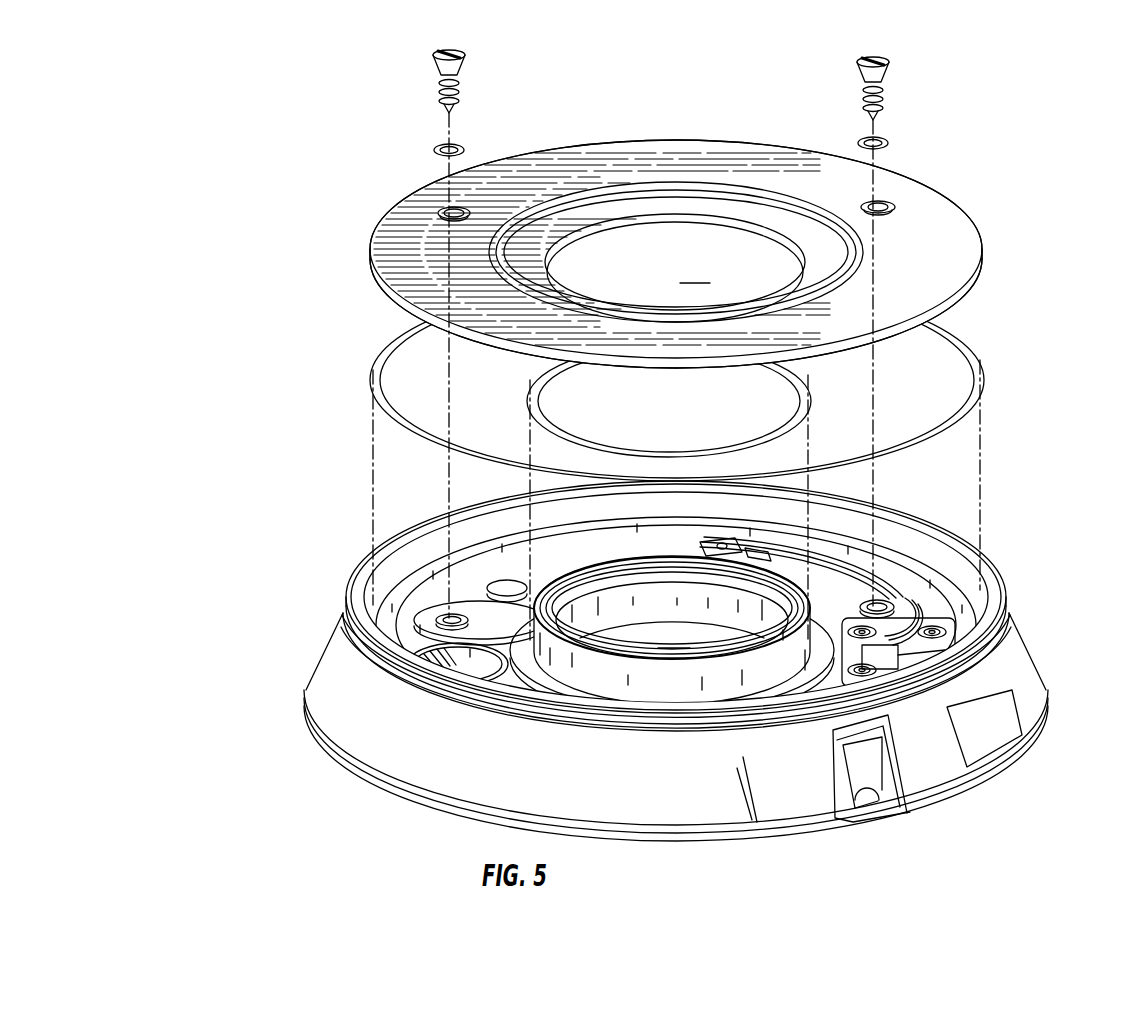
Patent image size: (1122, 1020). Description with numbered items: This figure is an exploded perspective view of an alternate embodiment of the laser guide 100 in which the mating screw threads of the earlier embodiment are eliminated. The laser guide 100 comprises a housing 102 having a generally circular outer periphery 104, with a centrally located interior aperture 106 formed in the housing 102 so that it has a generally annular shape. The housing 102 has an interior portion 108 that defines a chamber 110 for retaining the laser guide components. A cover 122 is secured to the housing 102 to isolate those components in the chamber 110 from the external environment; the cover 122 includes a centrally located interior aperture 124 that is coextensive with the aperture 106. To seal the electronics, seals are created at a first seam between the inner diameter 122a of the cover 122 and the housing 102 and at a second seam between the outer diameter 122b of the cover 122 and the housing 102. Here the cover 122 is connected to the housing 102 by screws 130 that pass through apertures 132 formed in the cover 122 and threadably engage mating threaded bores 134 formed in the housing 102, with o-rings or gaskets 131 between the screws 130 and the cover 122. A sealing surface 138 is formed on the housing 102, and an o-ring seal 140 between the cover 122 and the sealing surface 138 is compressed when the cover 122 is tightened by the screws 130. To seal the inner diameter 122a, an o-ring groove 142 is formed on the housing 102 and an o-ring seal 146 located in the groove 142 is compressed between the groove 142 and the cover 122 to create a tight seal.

The laser guide 100 is at (280, 462).
The housing 102 is at (668, 658).
The outer periphery 104 is at (638, 741).
The interior aperture 106 is at (672, 637).
The interior portion 108 is at (835, 528).
The chamber 110 is at (905, 546).
The cover 122 is at (708, 254).
The inner diameter 122a is at (658, 222).
The outer diameter 122b is at (967, 303).
The interior aperture 124 is at (676, 252).
The screws 130 is at (466, 60).
The o-rings or gaskets 131 is at (468, 150).
The apertures 132 is at (440, 215).
The threaded bores 134 is at (448, 623).
The sealing surface 138 is at (907, 577).
The o-ring seal 140 is at (706, 380).
The o-ring groove 142 is at (800, 625).
The o-ring seal 146 is at (822, 377).